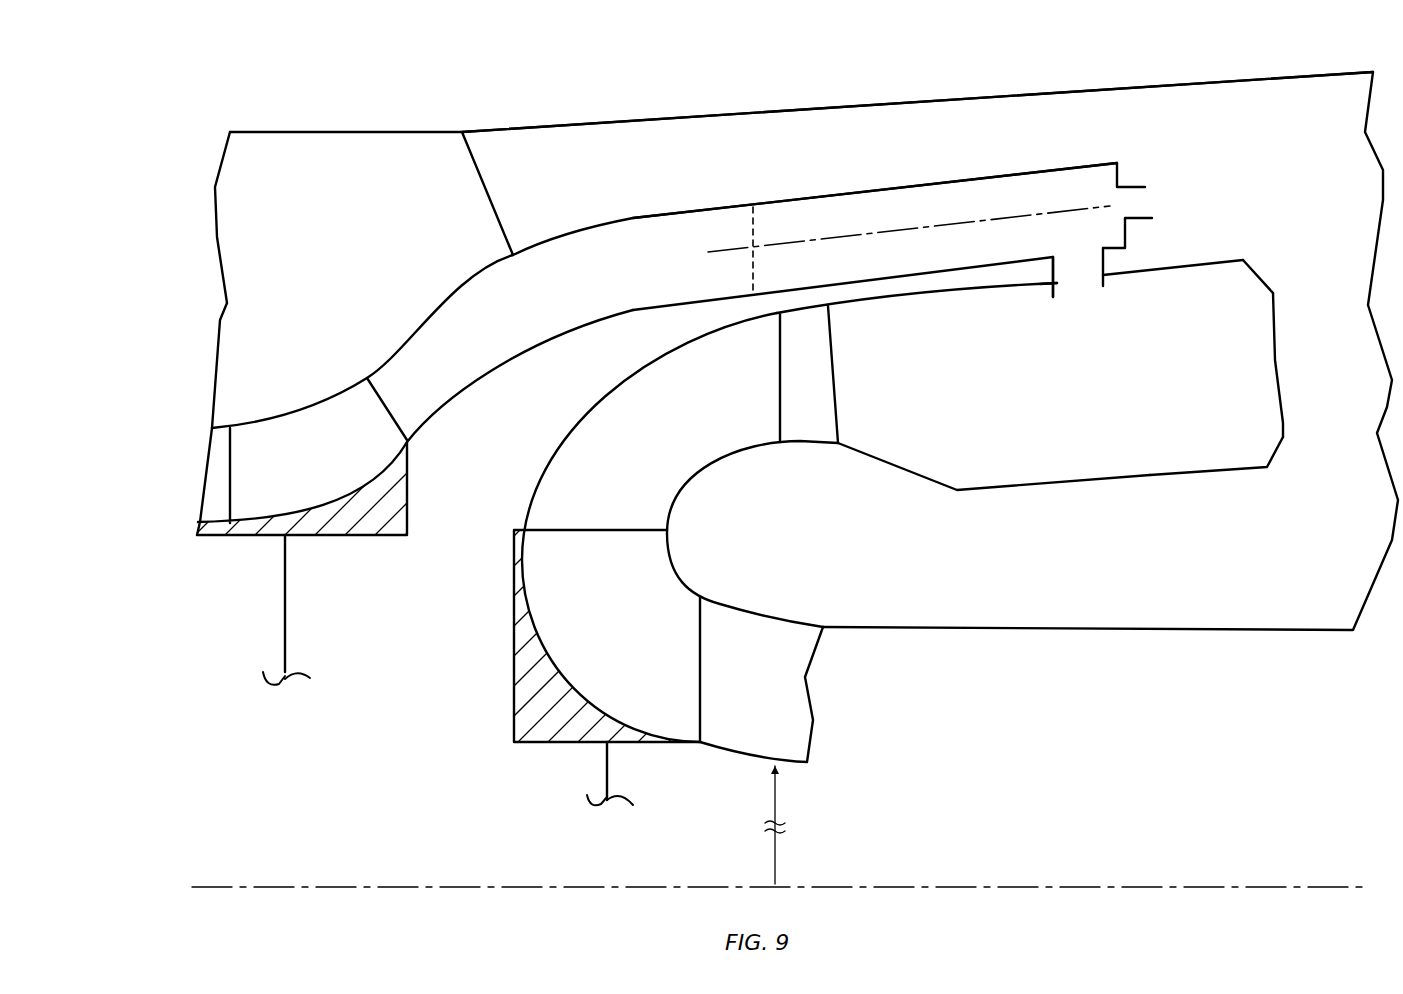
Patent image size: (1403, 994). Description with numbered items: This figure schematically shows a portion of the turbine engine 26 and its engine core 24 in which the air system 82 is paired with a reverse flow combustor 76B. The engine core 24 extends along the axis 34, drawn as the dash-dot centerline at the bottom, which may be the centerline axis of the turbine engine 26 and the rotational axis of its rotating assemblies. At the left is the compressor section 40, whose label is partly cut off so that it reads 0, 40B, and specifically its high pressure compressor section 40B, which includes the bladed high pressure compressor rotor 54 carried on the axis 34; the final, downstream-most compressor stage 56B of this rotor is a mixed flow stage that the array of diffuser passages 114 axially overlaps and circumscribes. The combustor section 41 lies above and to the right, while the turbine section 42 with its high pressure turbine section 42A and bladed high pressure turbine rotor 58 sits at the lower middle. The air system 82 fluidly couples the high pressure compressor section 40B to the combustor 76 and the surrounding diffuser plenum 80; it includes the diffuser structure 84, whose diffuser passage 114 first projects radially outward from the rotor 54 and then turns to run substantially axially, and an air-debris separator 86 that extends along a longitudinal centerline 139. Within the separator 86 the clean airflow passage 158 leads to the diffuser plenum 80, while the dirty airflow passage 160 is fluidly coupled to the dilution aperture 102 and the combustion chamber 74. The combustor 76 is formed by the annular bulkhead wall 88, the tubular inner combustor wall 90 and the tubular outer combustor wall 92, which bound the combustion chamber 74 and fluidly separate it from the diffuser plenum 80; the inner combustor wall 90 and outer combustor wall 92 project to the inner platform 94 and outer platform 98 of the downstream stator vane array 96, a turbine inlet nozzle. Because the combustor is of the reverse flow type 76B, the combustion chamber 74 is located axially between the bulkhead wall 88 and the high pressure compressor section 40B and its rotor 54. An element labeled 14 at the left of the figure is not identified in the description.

The engine core 24 is at (767, 336).
The turbine engine 26 is at (258, 82).
The combustor section 41 is at (1018, 78).
The compressor section 40 is at (221, 280).
The high pressure compressor section 40B is at (172, 280).
The rotor 0 is at (242, 283).
The diffuser structure 84 is at (438, 284).
The air system 82 is at (669, 192).
The air-debris separator 86 is at (996, 172).
The diffuser passage 114 is at (642, 281).
The longitudinal centerline 139 is at (730, 251).
The clean airflow passage 158 is at (1150, 199).
The dilution aperture 102 is at (1108, 284).
The dirty airflow passage 160 is at (1082, 297).
The combustor 76 is at (1222, 246).
The reverse flow combustor 76B is at (1230, 239).
The outer combustor wall 92 is at (1193, 268).
The bulkhead wall 88 is at (1285, 362).
The inner combustor wall 90 is at (1209, 467).
The combustion chamber 74 is at (1078, 397).
The outer platform 98 is at (808, 311).
The inner platform 94 is at (815, 440).
The stator vane array 96 is at (808, 462).
The diffuser plenum 80 is at (1285, 163).
The seal block 14 is at (195, 484).
The final compressor stage 56B is at (293, 410).
The high pressure compressor rotor 54 is at (306, 614).
The turbine section 42 is at (475, 734).
The high pressure turbine section 42A is at (610, 651).
The high pressure turbine rotor 58 is at (586, 769).
The axis 34 is at (228, 890).